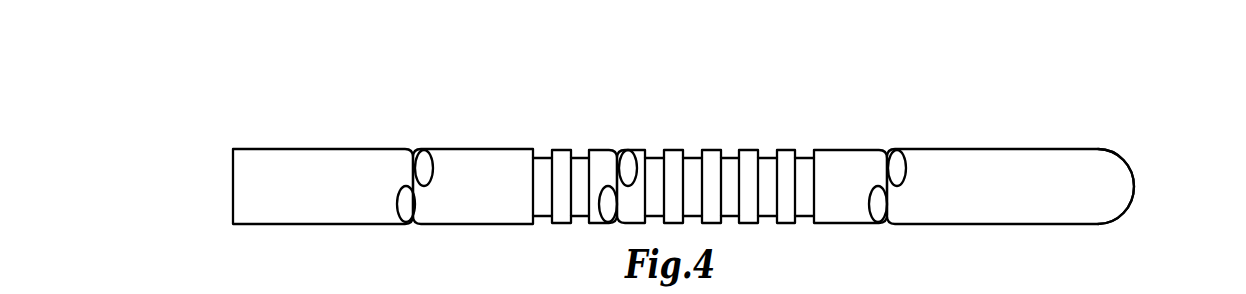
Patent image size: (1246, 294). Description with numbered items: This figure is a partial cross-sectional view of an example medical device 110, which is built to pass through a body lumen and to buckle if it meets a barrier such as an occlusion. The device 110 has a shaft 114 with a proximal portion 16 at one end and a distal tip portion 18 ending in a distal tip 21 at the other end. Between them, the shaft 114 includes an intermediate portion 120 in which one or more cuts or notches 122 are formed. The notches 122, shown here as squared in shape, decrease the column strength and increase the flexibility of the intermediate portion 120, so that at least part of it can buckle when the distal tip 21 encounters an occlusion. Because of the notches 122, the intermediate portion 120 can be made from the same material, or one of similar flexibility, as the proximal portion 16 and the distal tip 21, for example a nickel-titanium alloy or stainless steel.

The proximal portion 16 is at (276, 177).
The distal tip portion 18 is at (978, 178).
The distal tip 21 is at (1134, 184).
The device 110 is at (625, 124).
The shaft 114 is at (514, 146).
The intermediate portion 120 is at (673, 178).
The notches 122 is at (731, 150).